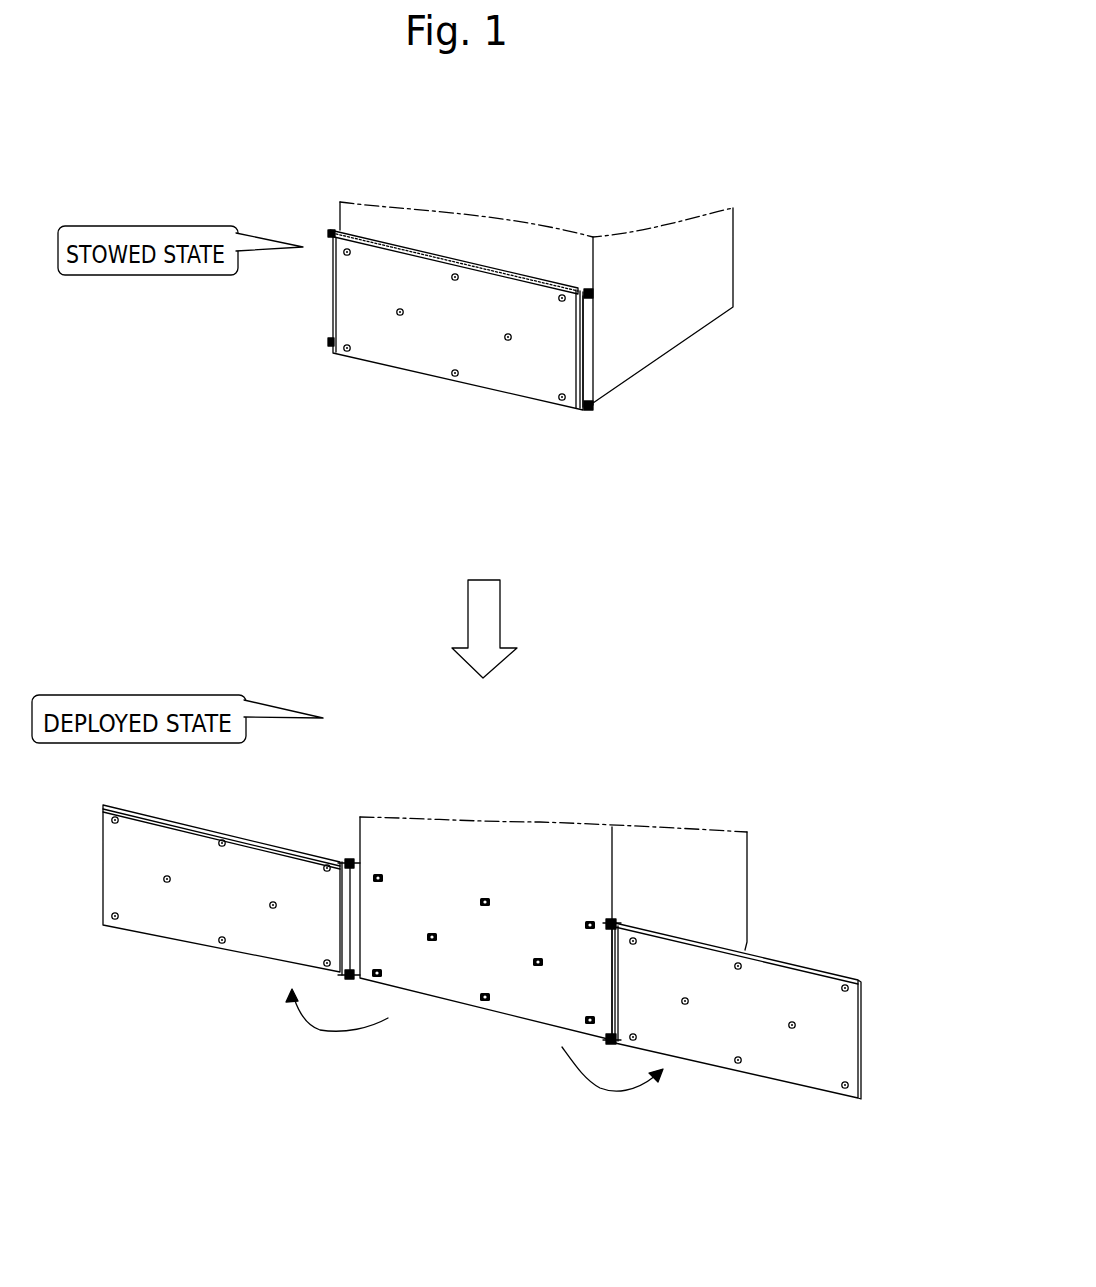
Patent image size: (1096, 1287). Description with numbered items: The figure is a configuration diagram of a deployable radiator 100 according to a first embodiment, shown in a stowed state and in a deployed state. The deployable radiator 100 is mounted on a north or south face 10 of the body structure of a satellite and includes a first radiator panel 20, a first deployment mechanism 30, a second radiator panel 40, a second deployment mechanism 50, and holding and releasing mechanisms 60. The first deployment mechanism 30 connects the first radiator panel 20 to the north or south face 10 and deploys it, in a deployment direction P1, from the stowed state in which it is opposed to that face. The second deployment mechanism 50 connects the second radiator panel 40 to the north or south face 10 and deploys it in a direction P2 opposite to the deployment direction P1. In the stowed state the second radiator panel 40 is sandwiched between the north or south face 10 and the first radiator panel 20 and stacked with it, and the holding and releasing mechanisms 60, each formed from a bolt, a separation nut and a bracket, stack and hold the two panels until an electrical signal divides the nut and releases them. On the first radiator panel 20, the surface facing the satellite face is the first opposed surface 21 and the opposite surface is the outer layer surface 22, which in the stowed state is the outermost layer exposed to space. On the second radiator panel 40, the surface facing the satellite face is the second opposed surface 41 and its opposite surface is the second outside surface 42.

The north or south face of the body structure of a satellite 10 is at (503, 245).
The deployable radiator 100 is at (605, 204).
The first radiator panel 20 is at (547, 704).
The first opposed surface 21 is at (725, 1047).
The outer layer surface 22 is at (415, 333).
The first deployment mechanism 30 is at (590, 296).
The second radiator panel 40 is at (315, 942).
The second opposed surface 41 is at (140, 918).
The second outside surface 42 is at (165, 863).
The second deployment mechanism 50 is at (332, 235).
The holding and releasing mechanism 60 is at (507, 337).
The deployment direction of the first radiator panel P1 is at (612, 1083).
The deployment direction of the second radiator panel P2 is at (337, 1028).